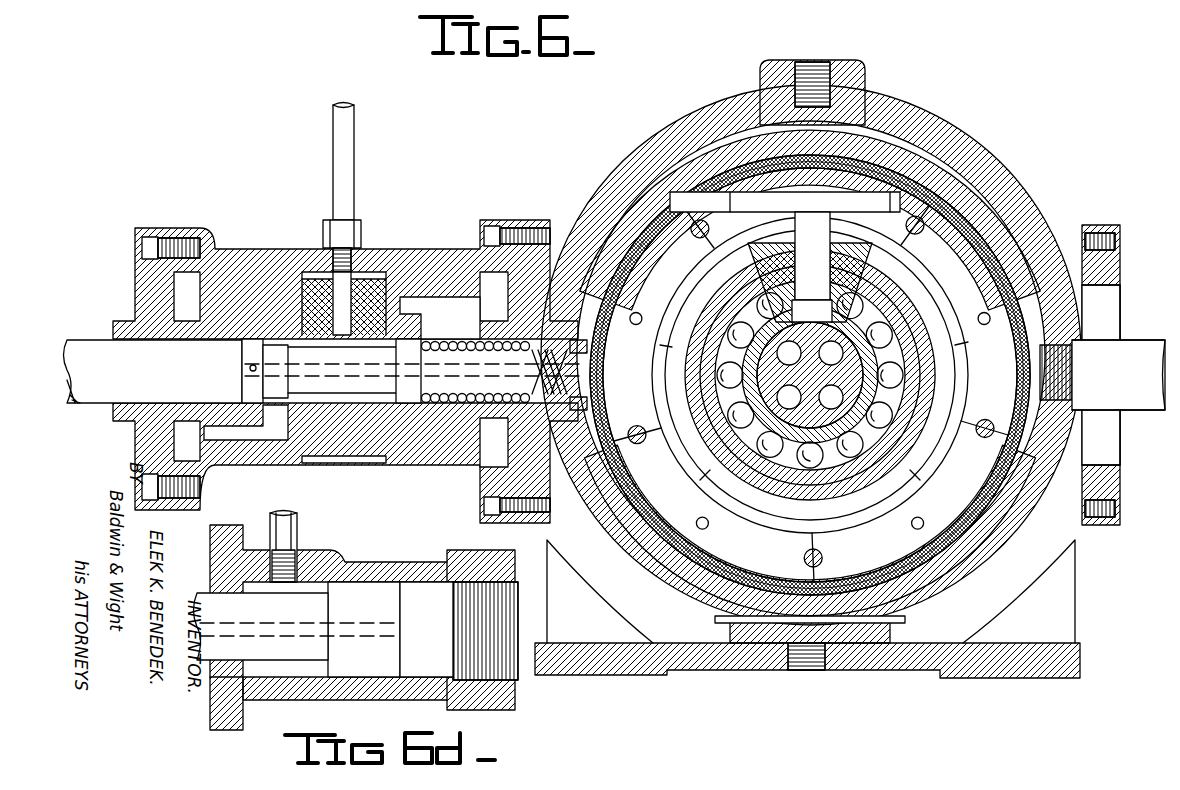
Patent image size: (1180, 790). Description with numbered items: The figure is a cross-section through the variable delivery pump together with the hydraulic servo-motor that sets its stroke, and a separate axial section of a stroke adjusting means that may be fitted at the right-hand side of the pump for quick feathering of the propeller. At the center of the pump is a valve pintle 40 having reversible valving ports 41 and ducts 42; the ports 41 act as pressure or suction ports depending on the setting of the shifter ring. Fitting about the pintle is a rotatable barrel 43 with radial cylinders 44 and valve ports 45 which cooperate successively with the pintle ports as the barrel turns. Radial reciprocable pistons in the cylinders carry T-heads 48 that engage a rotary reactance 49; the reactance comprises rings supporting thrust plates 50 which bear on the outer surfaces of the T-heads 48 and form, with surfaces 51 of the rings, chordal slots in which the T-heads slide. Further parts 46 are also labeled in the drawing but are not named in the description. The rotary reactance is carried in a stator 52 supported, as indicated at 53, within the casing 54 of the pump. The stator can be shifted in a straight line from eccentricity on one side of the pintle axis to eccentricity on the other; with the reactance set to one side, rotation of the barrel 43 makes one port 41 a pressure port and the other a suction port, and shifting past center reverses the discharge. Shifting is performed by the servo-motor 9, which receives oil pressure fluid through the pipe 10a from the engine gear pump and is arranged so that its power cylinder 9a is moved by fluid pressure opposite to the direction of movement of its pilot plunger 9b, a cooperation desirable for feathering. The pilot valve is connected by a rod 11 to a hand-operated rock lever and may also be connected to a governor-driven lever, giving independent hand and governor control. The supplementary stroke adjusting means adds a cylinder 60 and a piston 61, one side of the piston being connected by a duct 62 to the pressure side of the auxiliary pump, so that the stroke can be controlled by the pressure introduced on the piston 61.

In FIG. 6, the servo-motor 9 is at (391, 249).
In FIG. 6, the power cylinder 9a is at (229, 285).
In FIG. 6, the pilot plunger 9b is at (298, 351).
In FIG. 6, the pipe 10a is at (354, 132).
In FIG. 6, the rod 11 is at (102, 335).
In FIG. 6, the valve pintle 40 is at (860, 362).
In FIG. 6, the valving ports 41 is at (835, 405).
In FIG. 6, the ducts 42 is at (835, 392).
In FIG. 6, the rotatable barrel 43 is at (870, 255).
In FIG. 6, the radial cylinders 44 is at (810, 303).
In FIG. 6, the valve ports 45 is at (795, 322).
In FIG. 6, the spacer 46 is at (882, 530).
In FIG. 6, the T-heads 48 is at (762, 206).
In FIG. 6, the rotary reactance 49 is at (905, 210).
In FIG. 6, the thrust plates 50 is at (862, 185).
In FIG. 6, the surfaces 51 is at (920, 200).
In FIG. 6, the stator 52 is at (1035, 678).
In FIG. 6, the support 53 is at (790, 623).
In FIG. 6, the casing 54 is at (807, 660).
In FIG. 6A, the cylinder 60 is at (437, 660).
In FIG. 6A, the piston 61 is at (397, 602).
In FIG. 6A, the duct 62 is at (300, 523).